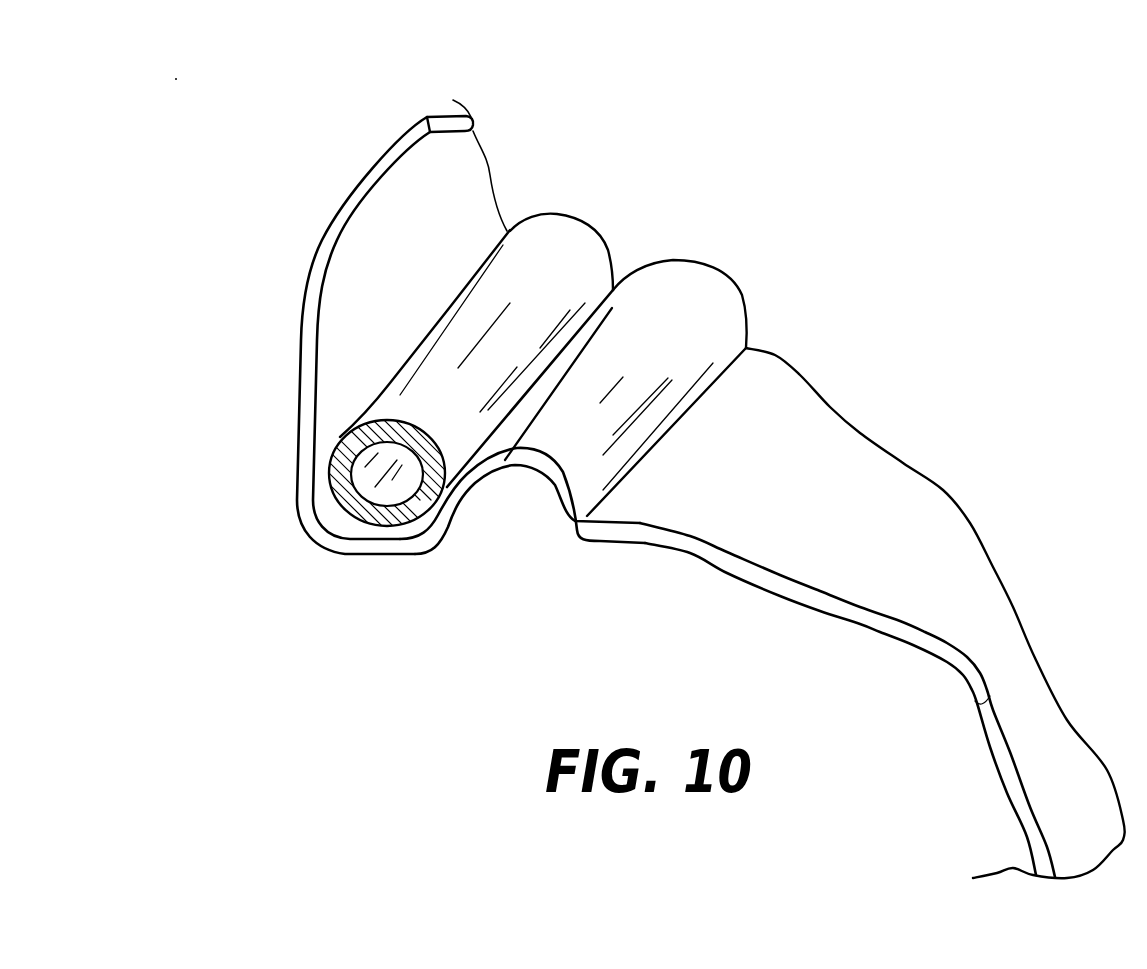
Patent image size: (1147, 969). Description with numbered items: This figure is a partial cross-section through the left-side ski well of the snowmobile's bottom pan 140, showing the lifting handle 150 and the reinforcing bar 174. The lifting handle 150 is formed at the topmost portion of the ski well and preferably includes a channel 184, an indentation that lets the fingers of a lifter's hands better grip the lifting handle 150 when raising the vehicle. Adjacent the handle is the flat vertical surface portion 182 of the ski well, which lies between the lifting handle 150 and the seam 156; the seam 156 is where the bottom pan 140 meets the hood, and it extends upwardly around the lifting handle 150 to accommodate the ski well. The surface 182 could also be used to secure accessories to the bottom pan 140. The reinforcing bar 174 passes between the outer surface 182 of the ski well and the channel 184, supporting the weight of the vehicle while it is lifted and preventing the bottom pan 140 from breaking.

The bottom pan 140 is at (803, 440).
The lifting handle 150 is at (371, 562).
The seam 156 is at (438, 113).
The reinforcing bar 174 is at (540, 260).
The flat vertical surface portion 182 is at (305, 377).
The channel 184 is at (517, 493).